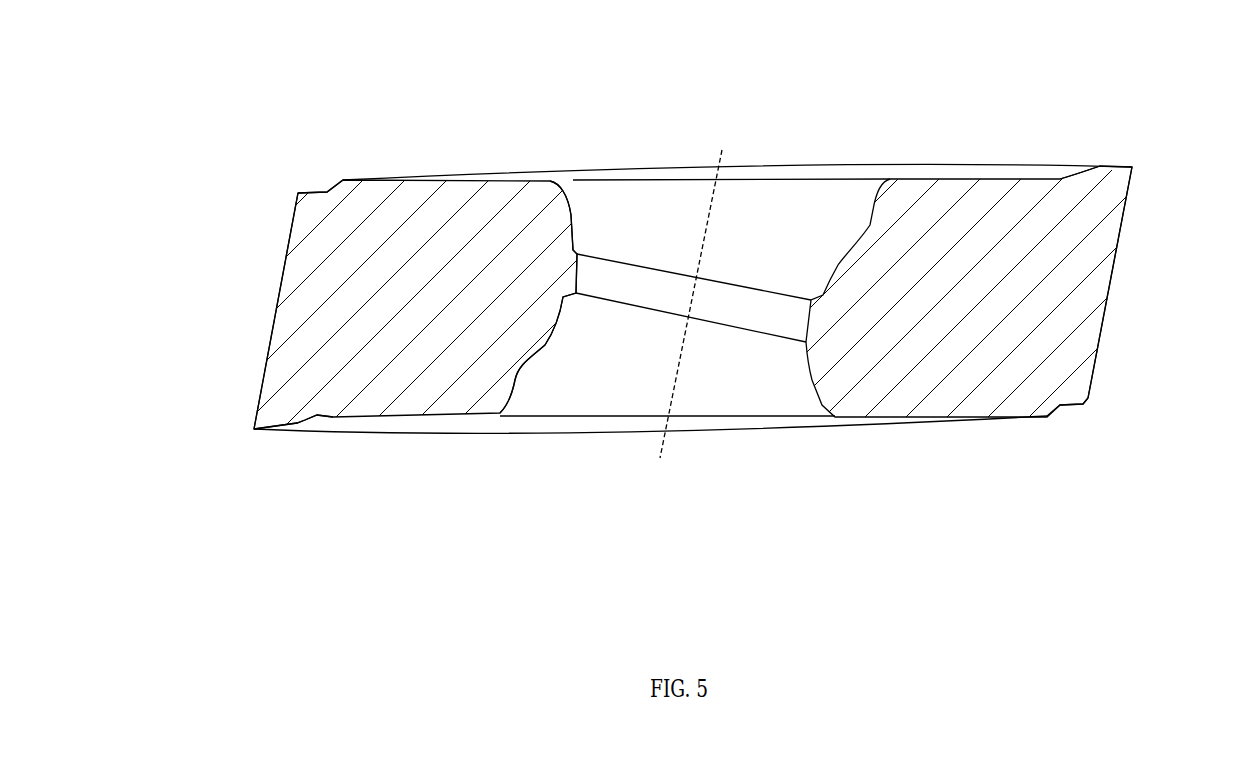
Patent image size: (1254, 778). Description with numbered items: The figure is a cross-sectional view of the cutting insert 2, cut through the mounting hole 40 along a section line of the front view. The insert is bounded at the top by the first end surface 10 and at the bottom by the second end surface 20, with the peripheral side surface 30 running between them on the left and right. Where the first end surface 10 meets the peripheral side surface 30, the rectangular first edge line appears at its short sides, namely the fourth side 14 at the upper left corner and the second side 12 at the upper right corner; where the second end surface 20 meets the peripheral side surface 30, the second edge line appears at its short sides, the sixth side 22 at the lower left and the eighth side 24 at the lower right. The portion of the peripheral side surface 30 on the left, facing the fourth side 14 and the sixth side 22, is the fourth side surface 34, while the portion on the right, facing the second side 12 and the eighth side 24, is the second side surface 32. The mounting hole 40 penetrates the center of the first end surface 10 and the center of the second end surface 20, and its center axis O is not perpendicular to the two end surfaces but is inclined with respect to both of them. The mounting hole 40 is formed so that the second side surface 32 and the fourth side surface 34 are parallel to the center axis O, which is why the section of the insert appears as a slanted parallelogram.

The cutting insert 2 is at (673, 647).
The first end surface 10 is at (948, 164).
The second side 12 is at (1133, 167).
The fourth side 14 is at (296, 191).
The second end surface 20 is at (927, 418).
The sixth side 22 is at (253, 431).
The eighth side 24 is at (1091, 408).
The peripheral side surface 30 is at (266, 352).
The second side surface 32 is at (1108, 290).
The fourth side surface 34 is at (278, 290).
The mounting hole 40 is at (590, 237).
The center axis O is at (722, 150).